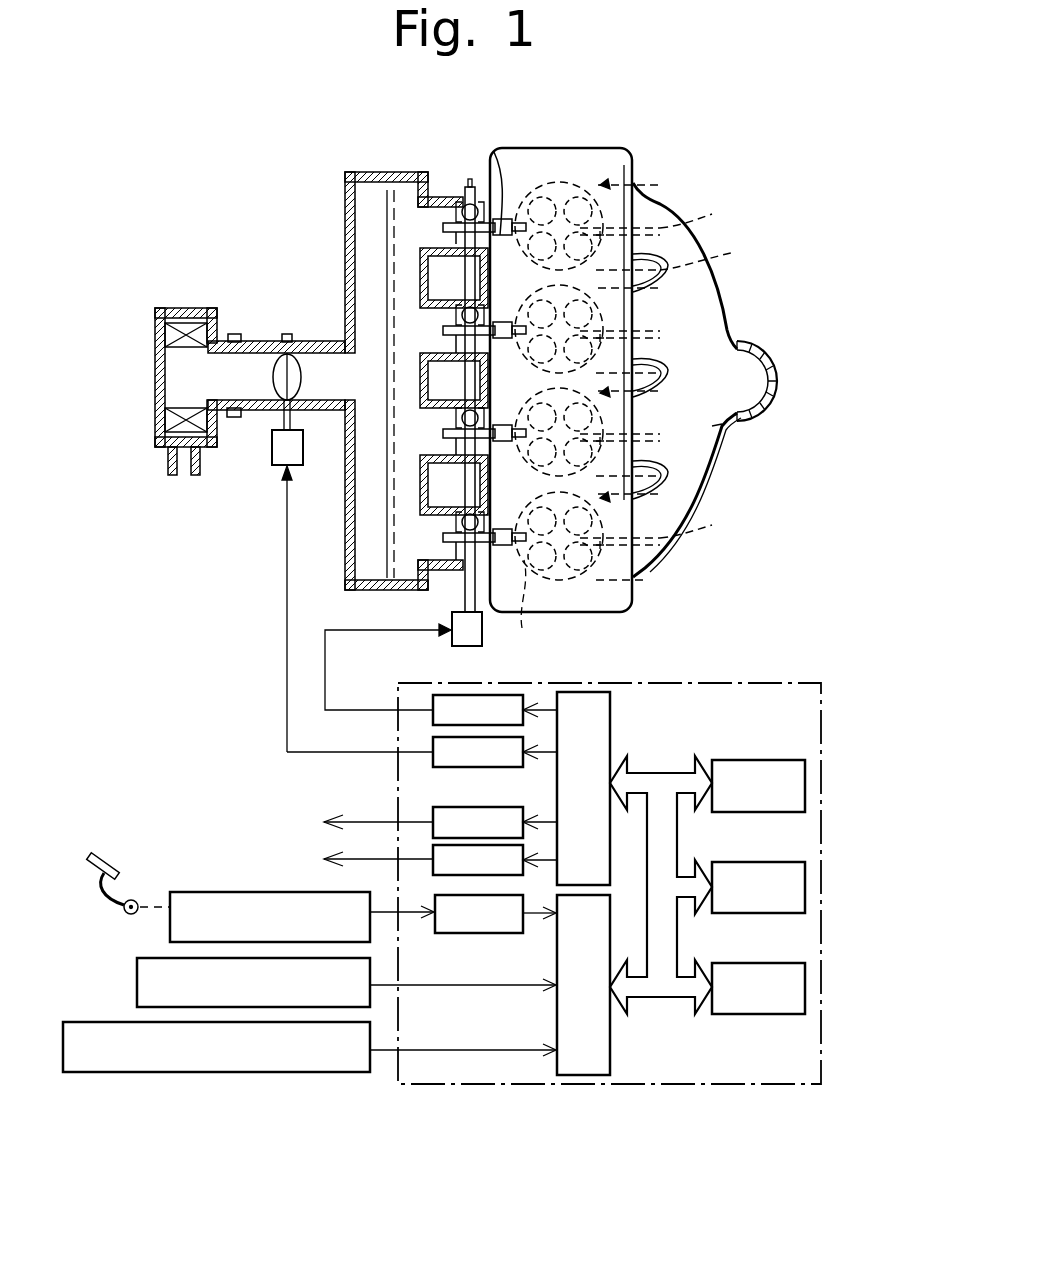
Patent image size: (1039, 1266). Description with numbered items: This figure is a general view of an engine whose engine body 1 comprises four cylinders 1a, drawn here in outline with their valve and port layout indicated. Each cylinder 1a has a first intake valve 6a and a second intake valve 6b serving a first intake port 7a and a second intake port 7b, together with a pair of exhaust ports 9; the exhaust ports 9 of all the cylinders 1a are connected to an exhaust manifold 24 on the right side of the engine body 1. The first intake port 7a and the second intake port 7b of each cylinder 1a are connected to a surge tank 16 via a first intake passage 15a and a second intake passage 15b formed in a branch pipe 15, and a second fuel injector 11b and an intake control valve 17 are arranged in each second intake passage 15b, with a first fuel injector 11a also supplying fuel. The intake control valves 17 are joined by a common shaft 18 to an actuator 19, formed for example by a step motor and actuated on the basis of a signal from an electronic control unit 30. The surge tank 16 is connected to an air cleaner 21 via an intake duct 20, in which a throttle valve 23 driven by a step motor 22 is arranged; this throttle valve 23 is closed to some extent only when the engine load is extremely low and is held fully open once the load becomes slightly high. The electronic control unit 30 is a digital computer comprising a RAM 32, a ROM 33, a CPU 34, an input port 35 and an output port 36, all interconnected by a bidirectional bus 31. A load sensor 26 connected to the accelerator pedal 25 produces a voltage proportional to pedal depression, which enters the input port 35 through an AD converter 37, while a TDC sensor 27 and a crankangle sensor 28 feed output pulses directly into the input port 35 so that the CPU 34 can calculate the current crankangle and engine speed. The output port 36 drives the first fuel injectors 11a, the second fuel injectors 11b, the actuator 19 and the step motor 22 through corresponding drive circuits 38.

The engine body 1 is at (640, 146).
The cylinder 1a is at (634, 184).
The first intake valve 6a is at (690, 262).
The second intake valve 6b is at (561, 178).
The first intake port 7a is at (560, 632).
The second intake port 7b is at (508, 215).
The exhaust port 9 is at (642, 215).
The first fuel injector 11a is at (494, 165).
The second fuel injector 11b is at (460, 312).
The branch pipe 15 is at (430, 184).
The first intake passage 15a is at (448, 236).
The second intake passage 15b is at (448, 212).
The surge tank 16 is at (345, 300).
The intake control valve 17 is at (469, 187).
The common shaft 18 is at (465, 385).
The actuator 19 is at (452, 646).
The intake duct 20 is at (262, 354).
The air cleaner 21 is at (155, 375).
The step motor 22 is at (272, 454).
The throttle valve 23 is at (306, 354).
The exhaust manifold 24 is at (744, 422).
The accelerator pedal 25 is at (114, 868).
The load sensor 26 is at (208, 892).
The TDC sensor 27 is at (146, 960).
The crankangle sensor 28 is at (74, 1022).
The electronic control unit 30 is at (818, 714).
The bidirectional bus 31 is at (663, 775).
The RAM 32 is at (758, 760).
The ROM 33 is at (758, 862).
The CPU 34 is at (758, 963).
The input port 35 is at (610, 1058).
The output port 36 is at (610, 719).
The AD converter 37 is at (468, 933).
The drive circuit 38 is at (433, 752).